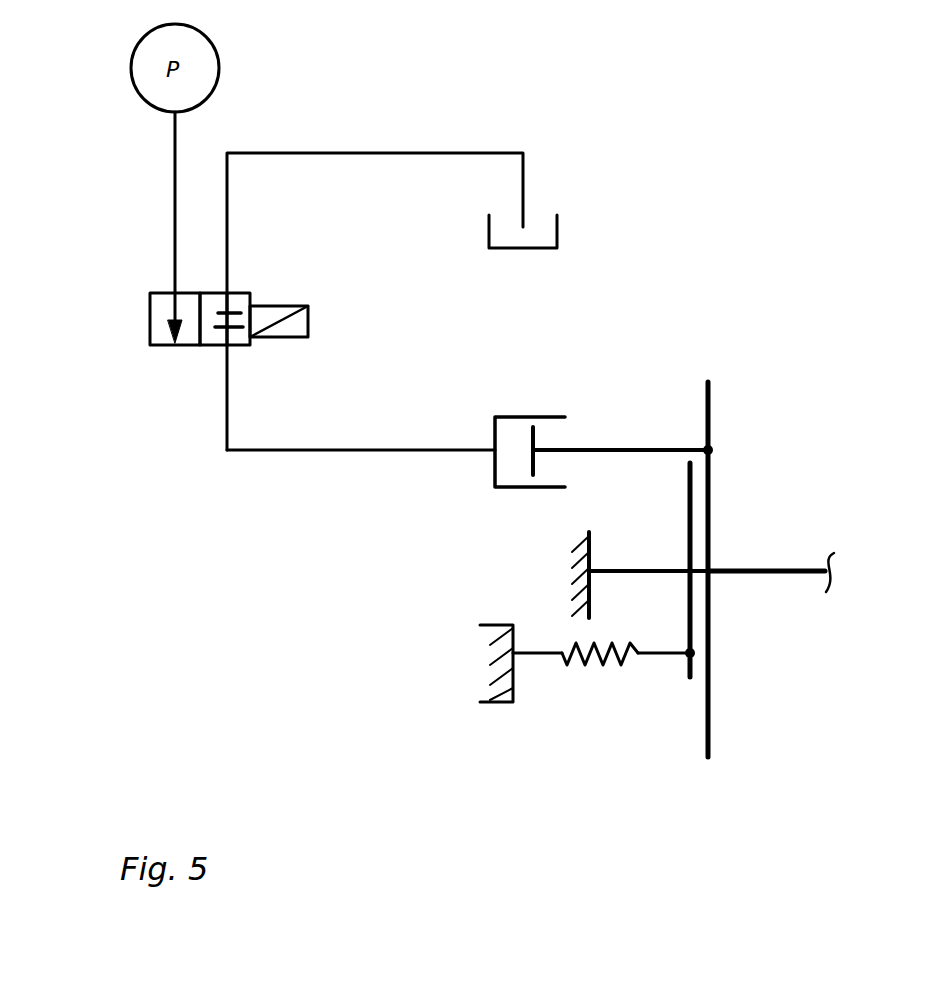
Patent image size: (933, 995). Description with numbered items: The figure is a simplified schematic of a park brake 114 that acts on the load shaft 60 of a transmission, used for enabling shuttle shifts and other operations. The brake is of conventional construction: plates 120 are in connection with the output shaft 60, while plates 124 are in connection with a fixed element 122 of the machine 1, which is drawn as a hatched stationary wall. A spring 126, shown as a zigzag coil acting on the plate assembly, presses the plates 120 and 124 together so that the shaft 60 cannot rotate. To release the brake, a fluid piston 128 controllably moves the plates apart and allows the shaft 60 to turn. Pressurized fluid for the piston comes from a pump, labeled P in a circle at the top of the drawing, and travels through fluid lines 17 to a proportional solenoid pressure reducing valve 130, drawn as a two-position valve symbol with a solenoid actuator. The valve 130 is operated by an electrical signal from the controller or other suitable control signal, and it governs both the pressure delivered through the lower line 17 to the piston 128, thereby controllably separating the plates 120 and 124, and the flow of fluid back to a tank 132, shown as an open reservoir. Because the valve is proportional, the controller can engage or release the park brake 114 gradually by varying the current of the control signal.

The machine 1 is at (587, 537).
The fluid lines 17 is at (172, 224).
The load shaft 60 is at (790, 567).
The park brake 114 is at (860, 387).
The plates 120 is at (708, 418).
The fixed element 122 is at (630, 570).
The plates 124 is at (687, 592).
The spring 126 is at (590, 663).
The fluid piston 128 is at (536, 465).
The proportional solenoid pressure reducing valve 130 is at (148, 322).
The tank 132 is at (557, 235).